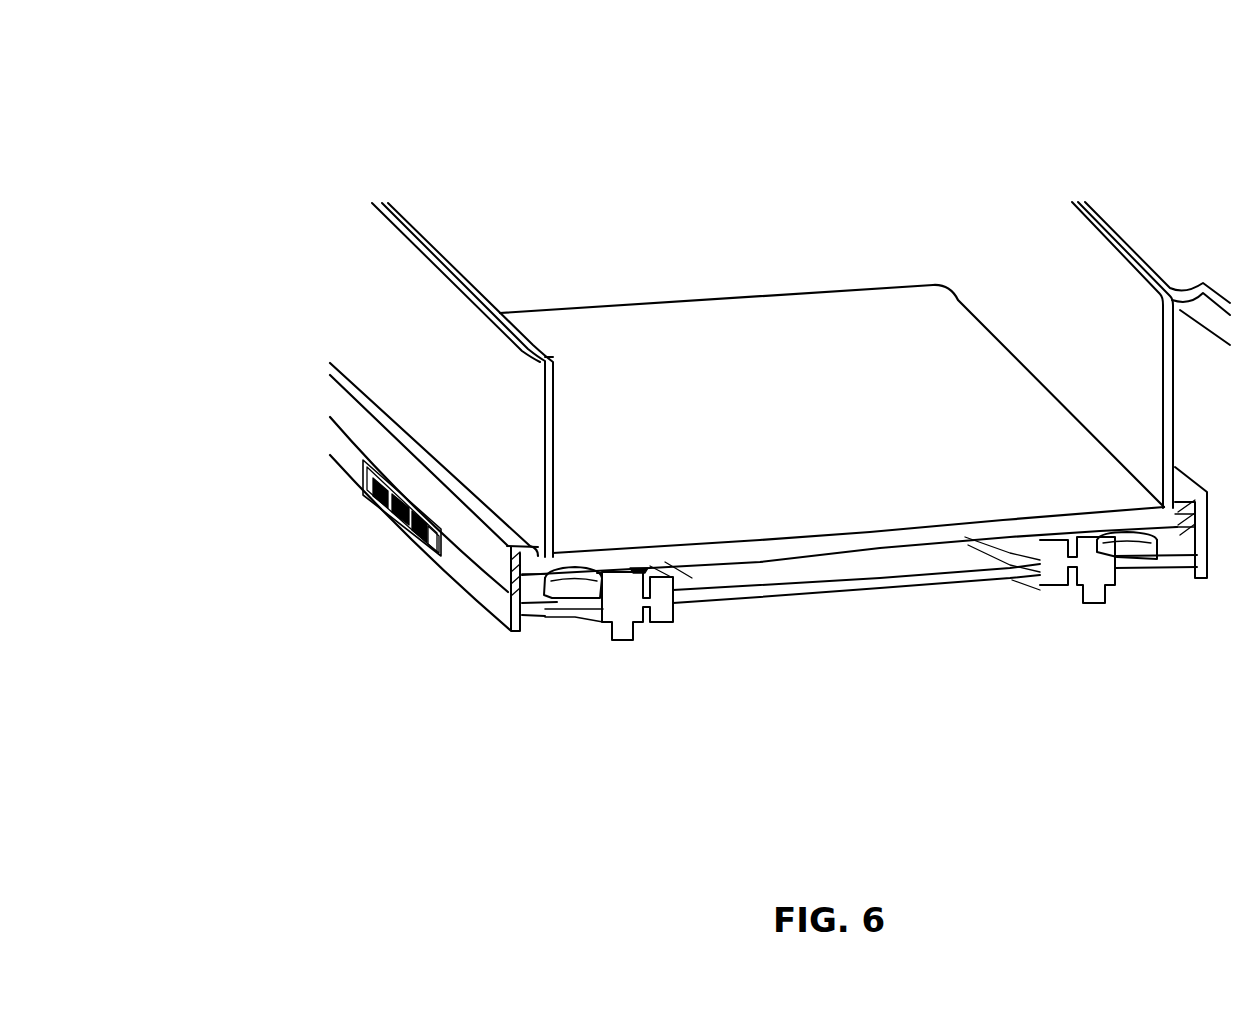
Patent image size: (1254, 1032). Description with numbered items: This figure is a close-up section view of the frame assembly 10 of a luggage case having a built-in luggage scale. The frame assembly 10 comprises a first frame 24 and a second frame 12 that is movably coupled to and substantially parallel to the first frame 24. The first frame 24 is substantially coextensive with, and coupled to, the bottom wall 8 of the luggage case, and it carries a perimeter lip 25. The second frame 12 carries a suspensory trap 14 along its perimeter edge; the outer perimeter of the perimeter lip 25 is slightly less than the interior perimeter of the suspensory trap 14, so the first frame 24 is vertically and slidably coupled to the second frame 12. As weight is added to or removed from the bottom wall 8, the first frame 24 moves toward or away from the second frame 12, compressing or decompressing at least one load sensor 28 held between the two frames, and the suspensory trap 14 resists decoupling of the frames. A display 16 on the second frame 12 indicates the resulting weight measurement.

The bottom wall 8 is at (931, 398).
The frame assembly 10 is at (770, 624).
The second frame 12 is at (480, 590).
The suspensory trap 14 is at (345, 373).
The display 16 is at (390, 515).
The first frame 24 is at (880, 535).
The perimeter lip 25 is at (1186, 507).
The load sensor 28 is at (590, 588).